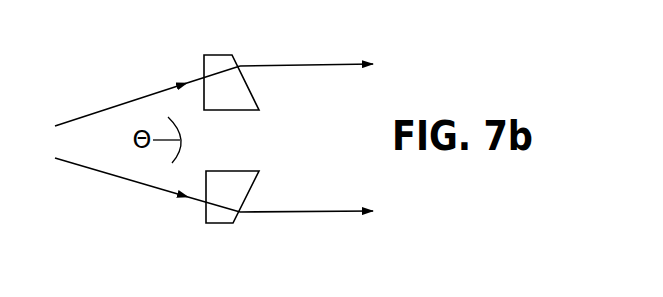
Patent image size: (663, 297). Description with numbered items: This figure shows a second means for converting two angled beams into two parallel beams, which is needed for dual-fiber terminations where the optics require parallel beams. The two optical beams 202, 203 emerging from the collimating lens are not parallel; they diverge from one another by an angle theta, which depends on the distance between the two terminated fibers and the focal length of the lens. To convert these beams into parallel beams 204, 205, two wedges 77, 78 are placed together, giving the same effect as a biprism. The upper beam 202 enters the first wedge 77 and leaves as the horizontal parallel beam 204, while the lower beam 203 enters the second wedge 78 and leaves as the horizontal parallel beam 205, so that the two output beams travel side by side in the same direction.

The optical beam 202 is at (135, 97).
The optical beam 203 is at (130, 182).
The wedge 77 is at (215, 62).
The wedge 78 is at (217, 217).
The parallel beam 204 is at (299, 62).
The parallel beam 205 is at (300, 213).